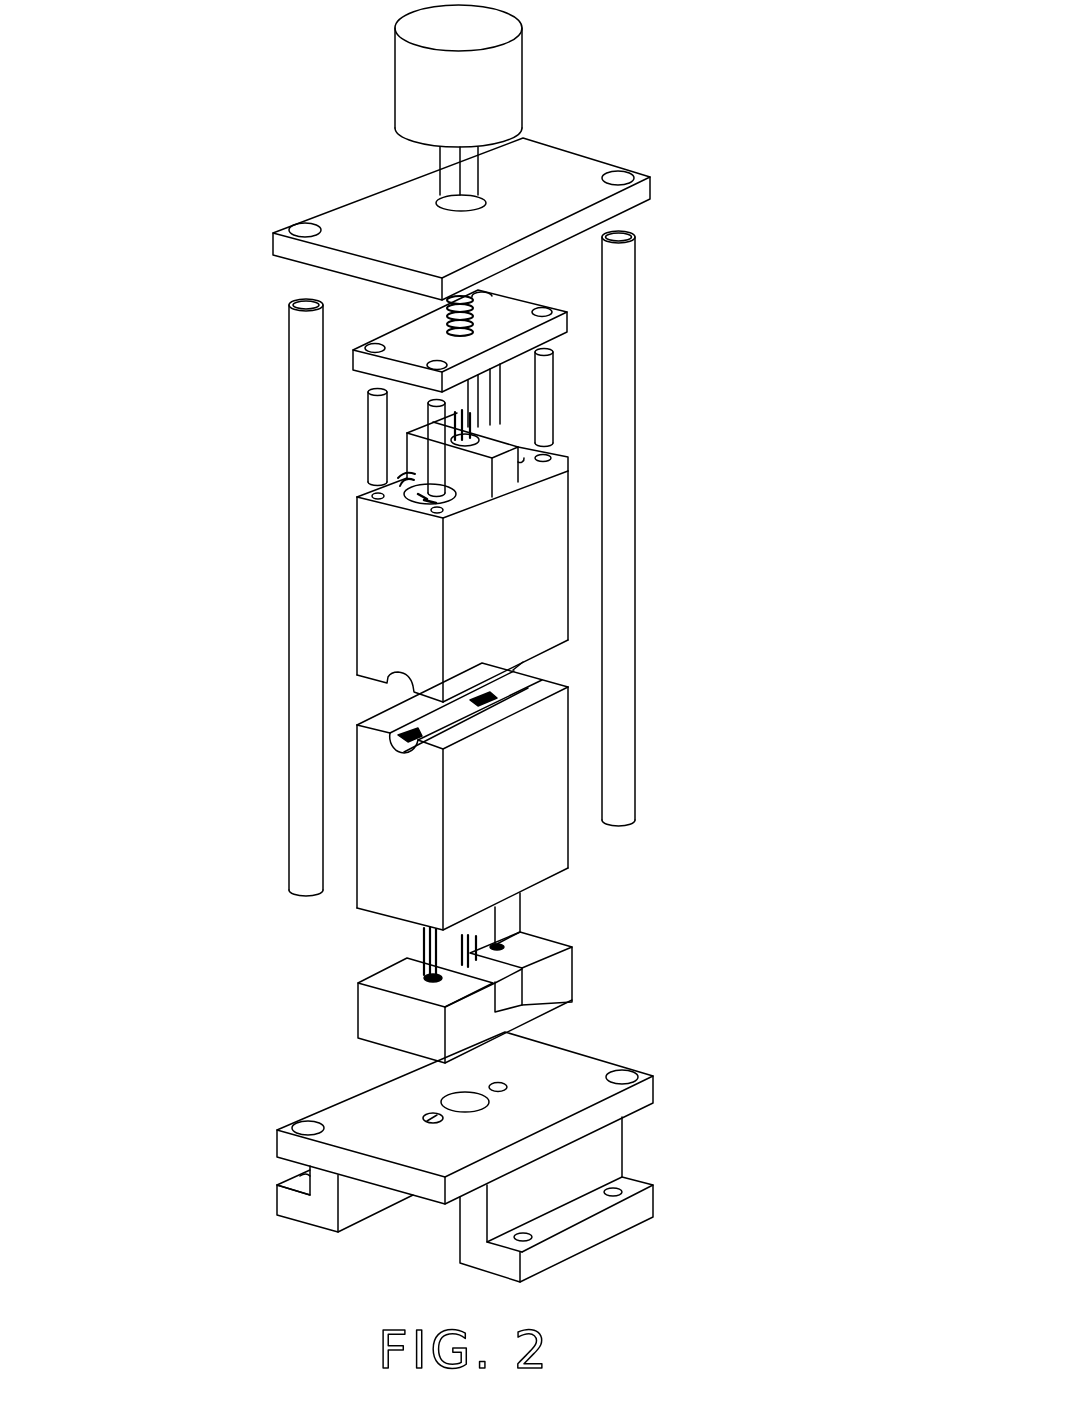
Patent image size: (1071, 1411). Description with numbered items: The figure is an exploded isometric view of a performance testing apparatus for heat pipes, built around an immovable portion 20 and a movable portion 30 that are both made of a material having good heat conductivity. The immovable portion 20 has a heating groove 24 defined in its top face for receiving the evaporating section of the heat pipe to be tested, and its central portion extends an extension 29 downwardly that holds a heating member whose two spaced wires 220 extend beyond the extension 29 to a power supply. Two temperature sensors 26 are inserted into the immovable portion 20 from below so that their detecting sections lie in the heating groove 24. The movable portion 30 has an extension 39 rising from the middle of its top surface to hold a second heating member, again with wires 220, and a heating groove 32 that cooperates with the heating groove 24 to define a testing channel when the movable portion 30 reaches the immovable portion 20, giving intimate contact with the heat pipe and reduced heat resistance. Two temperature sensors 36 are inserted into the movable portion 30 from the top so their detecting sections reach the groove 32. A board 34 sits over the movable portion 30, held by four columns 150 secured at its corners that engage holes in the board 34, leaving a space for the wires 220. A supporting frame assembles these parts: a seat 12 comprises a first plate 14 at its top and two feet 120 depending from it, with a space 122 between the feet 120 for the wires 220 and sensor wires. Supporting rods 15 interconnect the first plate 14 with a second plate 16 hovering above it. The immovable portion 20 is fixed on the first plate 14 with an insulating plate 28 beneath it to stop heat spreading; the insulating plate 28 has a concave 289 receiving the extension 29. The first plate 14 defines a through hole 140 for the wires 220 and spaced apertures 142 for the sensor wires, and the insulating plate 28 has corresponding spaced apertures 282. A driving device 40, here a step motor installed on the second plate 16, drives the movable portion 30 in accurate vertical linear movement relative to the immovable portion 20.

The seat 12 is at (588, 1147).
The feet 120 is at (633, 1207).
The space 122 is at (408, 1217).
The first plate 14 is at (570, 1078).
The through hole 140 is at (457, 1098).
The spaced apertures 142 is at (425, 1117).
The supporting rods 15 is at (622, 576).
The columns 150 is at (378, 422).
The second plate 16 is at (635, 195).
The immovable portion 20 is at (390, 833).
The wires 220 is at (462, 424).
The heating groove 24 is at (405, 742).
The temperature sensors 26 is at (405, 729).
The insulating plate 28 is at (377, 1012).
The spaced apertures 282 is at (422, 970).
The concave 289 is at (512, 986).
The extension 29 is at (510, 913).
The movable portion 30 is at (375, 535).
The heating groove 32 is at (387, 679).
The board 34 is at (363, 362).
The temperature sensors 36 is at (403, 480).
The extension 39 is at (508, 466).
The driving device 40 is at (496, 84).